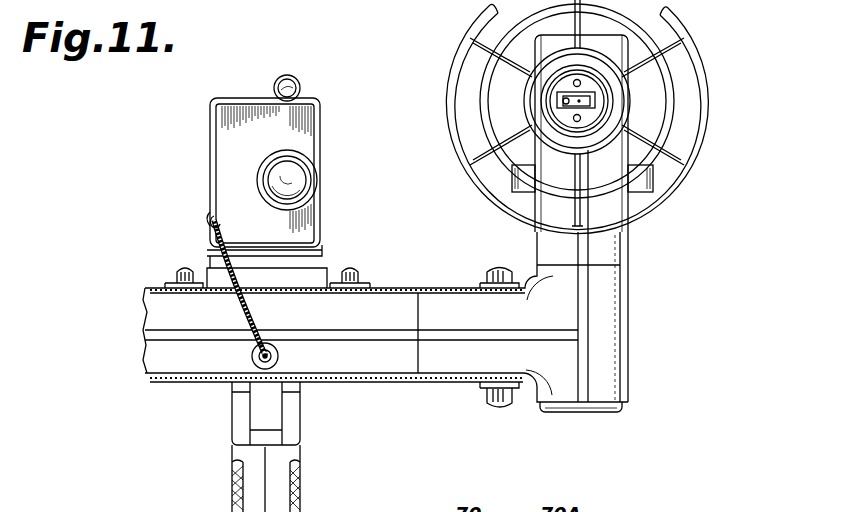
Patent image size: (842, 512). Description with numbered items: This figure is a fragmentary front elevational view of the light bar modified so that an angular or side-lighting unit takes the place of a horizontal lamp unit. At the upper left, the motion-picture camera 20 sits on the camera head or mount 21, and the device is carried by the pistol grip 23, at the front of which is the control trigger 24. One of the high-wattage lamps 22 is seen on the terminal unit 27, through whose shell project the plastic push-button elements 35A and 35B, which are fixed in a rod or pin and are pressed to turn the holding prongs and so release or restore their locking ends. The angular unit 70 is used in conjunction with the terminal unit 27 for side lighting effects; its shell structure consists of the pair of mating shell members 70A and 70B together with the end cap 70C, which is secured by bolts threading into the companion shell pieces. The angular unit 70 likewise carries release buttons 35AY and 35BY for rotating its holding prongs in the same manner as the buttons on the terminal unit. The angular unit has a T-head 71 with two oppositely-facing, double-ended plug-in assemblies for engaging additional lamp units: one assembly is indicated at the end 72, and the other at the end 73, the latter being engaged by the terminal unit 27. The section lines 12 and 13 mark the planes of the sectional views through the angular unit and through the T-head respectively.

The motion-picture camera 20 is at (301, 139).
The camera head or mount 21 is at (331, 262).
The high-wattage lamp 22 is at (668, 80).
The pistol grip 23 is at (300, 477).
The control trigger 24 is at (268, 418).
The terminal unit 27 is at (630, 233).
The push-button element 35A is at (653, 183).
The push-button element 35B is at (512, 183).
The release button 35AY is at (505, 265).
The release button 35BY is at (492, 401).
The angular unit 70 is at (440, 284).
The mating shell member 70A is at (486, 323).
The mating shell member 70B is at (486, 371).
The end cap 70C is at (626, 313).
The T-head 71 is at (632, 373).
The plug-in assembly end 72 is at (615, 410).
The plug-in assembly end 73 is at (632, 268).
The section line 12- 12 is at (388, 356).
The section line 13- 13 is at (562, 250).